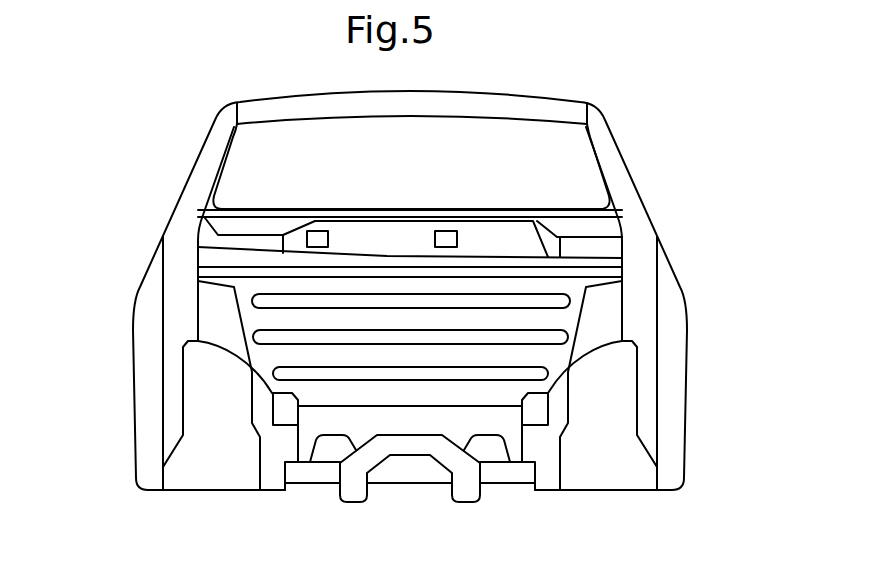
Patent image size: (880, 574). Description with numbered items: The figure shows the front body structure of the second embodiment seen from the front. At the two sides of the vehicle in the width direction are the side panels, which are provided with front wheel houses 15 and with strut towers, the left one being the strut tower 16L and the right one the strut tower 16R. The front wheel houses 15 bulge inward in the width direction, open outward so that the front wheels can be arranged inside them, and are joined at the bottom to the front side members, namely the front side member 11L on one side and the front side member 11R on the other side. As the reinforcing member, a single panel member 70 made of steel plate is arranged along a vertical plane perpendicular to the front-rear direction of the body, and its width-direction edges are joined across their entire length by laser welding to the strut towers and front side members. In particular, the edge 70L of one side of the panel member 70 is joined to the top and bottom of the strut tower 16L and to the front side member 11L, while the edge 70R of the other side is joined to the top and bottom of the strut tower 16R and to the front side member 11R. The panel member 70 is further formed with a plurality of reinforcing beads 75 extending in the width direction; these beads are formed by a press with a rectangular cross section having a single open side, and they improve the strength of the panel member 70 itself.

The front wheel house 15 is at (128, 438).
The strut tower of one side in the width direction 16L is at (227, 307).
The strut tower of the other side in the width direction 16R is at (612, 310).
The panel member 70 is at (395, 293).
The edge of one side of the panel member 70L is at (245, 330).
The edge of the other side of the panel member 70R is at (577, 332).
The front side member of one side in the width direction 11L is at (285, 410).
The front side member of the other side in the width direction 11R is at (530, 412).
The reinforcing bead 75 is at (409, 372).